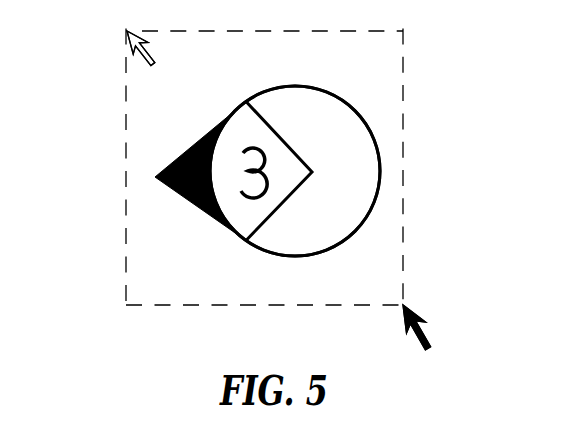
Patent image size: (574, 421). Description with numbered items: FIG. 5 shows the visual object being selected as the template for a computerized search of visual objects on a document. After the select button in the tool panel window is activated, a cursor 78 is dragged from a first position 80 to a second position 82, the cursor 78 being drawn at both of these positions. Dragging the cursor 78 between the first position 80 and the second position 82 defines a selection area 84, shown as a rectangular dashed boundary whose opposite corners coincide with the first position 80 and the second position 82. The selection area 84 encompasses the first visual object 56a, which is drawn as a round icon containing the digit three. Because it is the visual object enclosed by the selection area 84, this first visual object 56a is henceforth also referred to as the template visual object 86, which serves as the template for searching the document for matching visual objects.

The first visual object 56a is at (350, 105).
The template visual object 86 is at (295, 171).
The selection area 84 is at (126, 240).
The first position 80 is at (125, 31).
The second position 82 is at (403, 305).
The cursor 78 is at (130, 44).